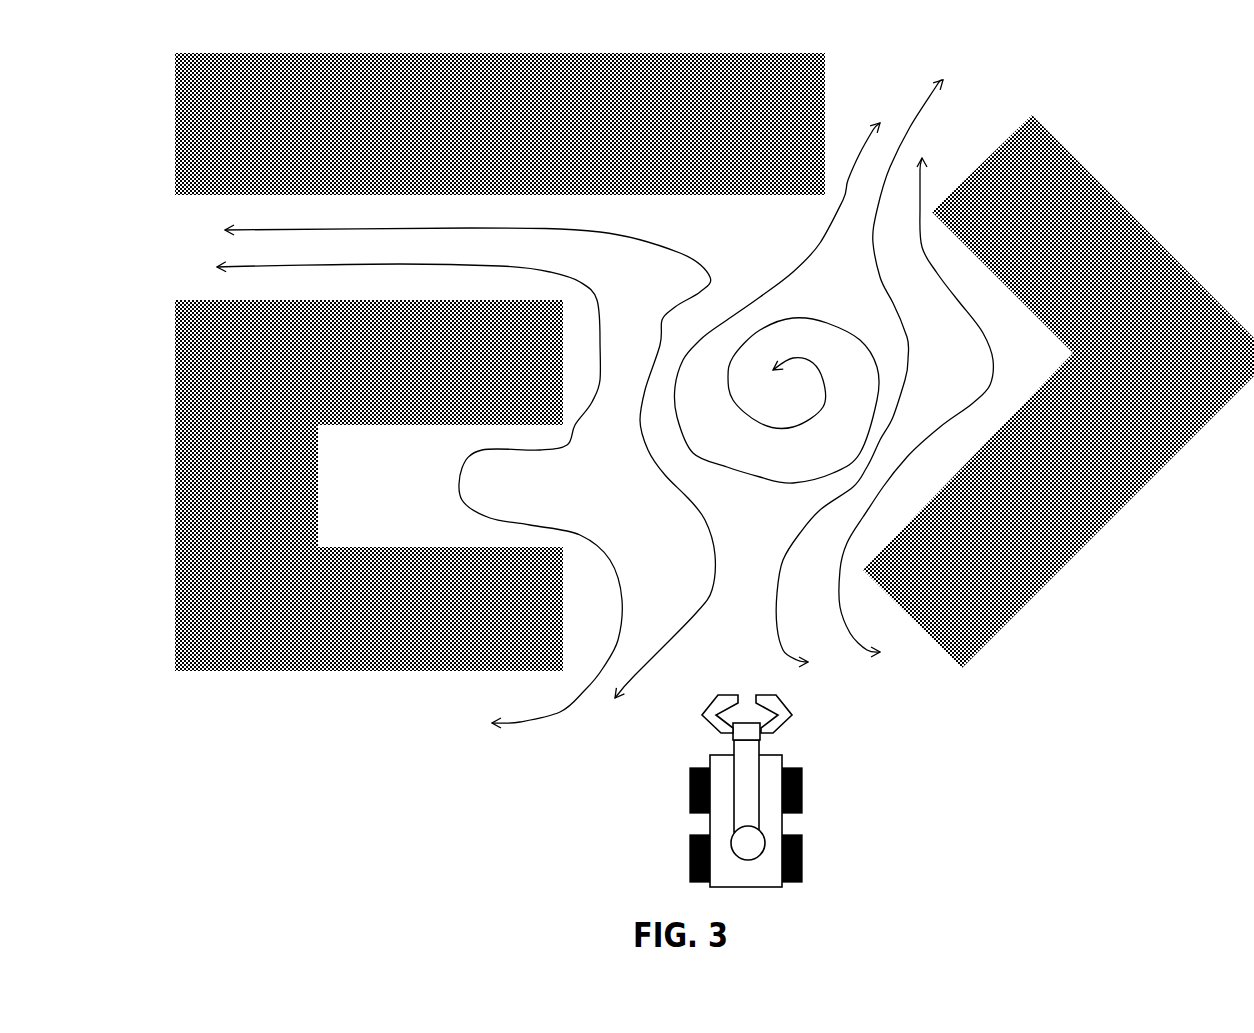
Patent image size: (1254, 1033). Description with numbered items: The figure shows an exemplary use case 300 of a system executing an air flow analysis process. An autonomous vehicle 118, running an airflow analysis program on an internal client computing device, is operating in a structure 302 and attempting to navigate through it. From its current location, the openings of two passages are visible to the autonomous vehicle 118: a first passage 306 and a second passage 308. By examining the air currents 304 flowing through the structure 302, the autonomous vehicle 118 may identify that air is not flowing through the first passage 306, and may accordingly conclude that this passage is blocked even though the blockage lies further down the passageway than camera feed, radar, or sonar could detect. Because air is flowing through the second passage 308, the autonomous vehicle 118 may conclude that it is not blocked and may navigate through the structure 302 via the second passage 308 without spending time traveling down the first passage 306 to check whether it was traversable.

The exemplary use case 300 is at (155, 72).
The structure 302 is at (1058, 462).
The air currents 304 is at (719, 392).
The first passage 306 is at (369, 485).
The second passage 308 is at (428, 475).
The autonomous vehicle 118 is at (708, 822).